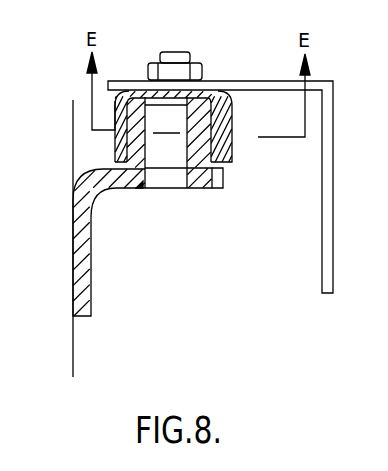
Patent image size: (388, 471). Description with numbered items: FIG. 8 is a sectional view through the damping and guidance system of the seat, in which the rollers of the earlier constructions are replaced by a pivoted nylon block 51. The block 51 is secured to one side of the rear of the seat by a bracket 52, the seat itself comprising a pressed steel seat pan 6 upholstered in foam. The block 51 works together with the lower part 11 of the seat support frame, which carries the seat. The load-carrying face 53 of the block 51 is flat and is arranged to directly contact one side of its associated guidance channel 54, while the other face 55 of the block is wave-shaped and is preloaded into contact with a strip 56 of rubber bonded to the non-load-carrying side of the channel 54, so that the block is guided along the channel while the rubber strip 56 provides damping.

The seat pan 6 is at (62, 347).
The lower part of seat support frame 11 is at (333, 229).
The pivoted nylon block 51 is at (130, 145).
The bracket 52 is at (80, 232).
The load-carrying face 53 is at (125, 122).
The guidance channel 54 is at (228, 117).
The other face 55 is at (231, 152).
The strip of rubber 56 is at (232, 152).